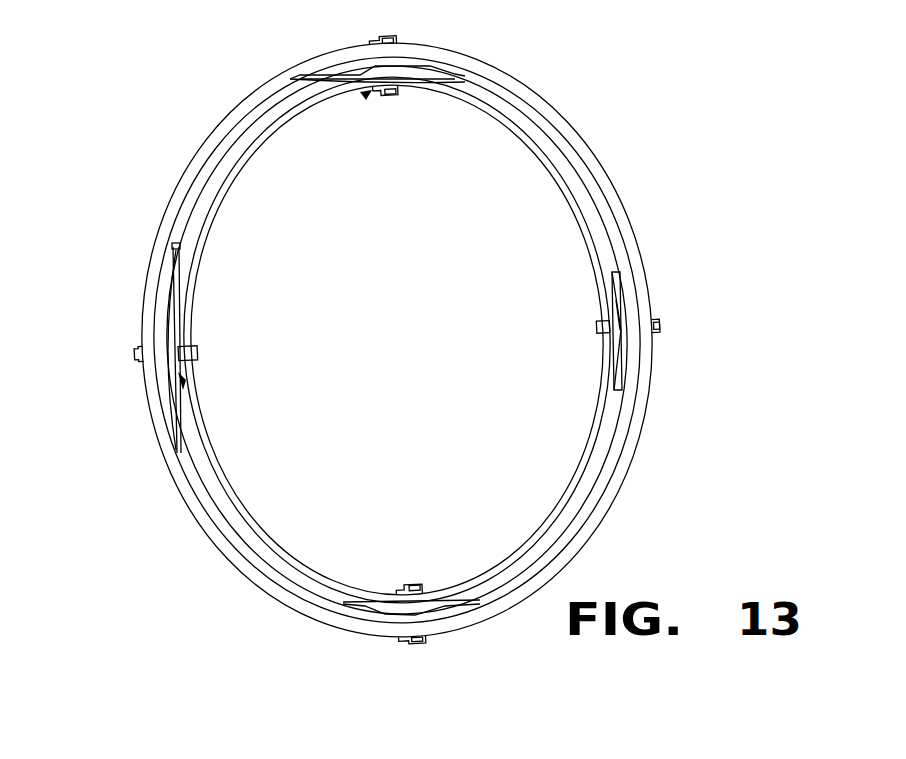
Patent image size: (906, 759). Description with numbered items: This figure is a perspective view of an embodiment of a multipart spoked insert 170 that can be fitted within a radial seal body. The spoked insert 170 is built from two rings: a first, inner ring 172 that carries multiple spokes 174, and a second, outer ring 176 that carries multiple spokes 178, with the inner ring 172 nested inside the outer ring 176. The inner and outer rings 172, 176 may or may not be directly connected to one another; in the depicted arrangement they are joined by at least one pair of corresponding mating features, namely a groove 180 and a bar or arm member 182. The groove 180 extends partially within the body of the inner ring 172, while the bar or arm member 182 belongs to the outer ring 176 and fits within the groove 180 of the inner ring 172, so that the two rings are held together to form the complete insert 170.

The spoked insert 170 is at (626, 156).
The inner ring 172 is at (255, 545).
The spokes 174 is at (598, 328).
The outer ring 176 is at (600, 520).
The spokes 178 is at (661, 326).
The groove 180 is at (352, 104).
The bar or arm member 182 is at (447, 78).